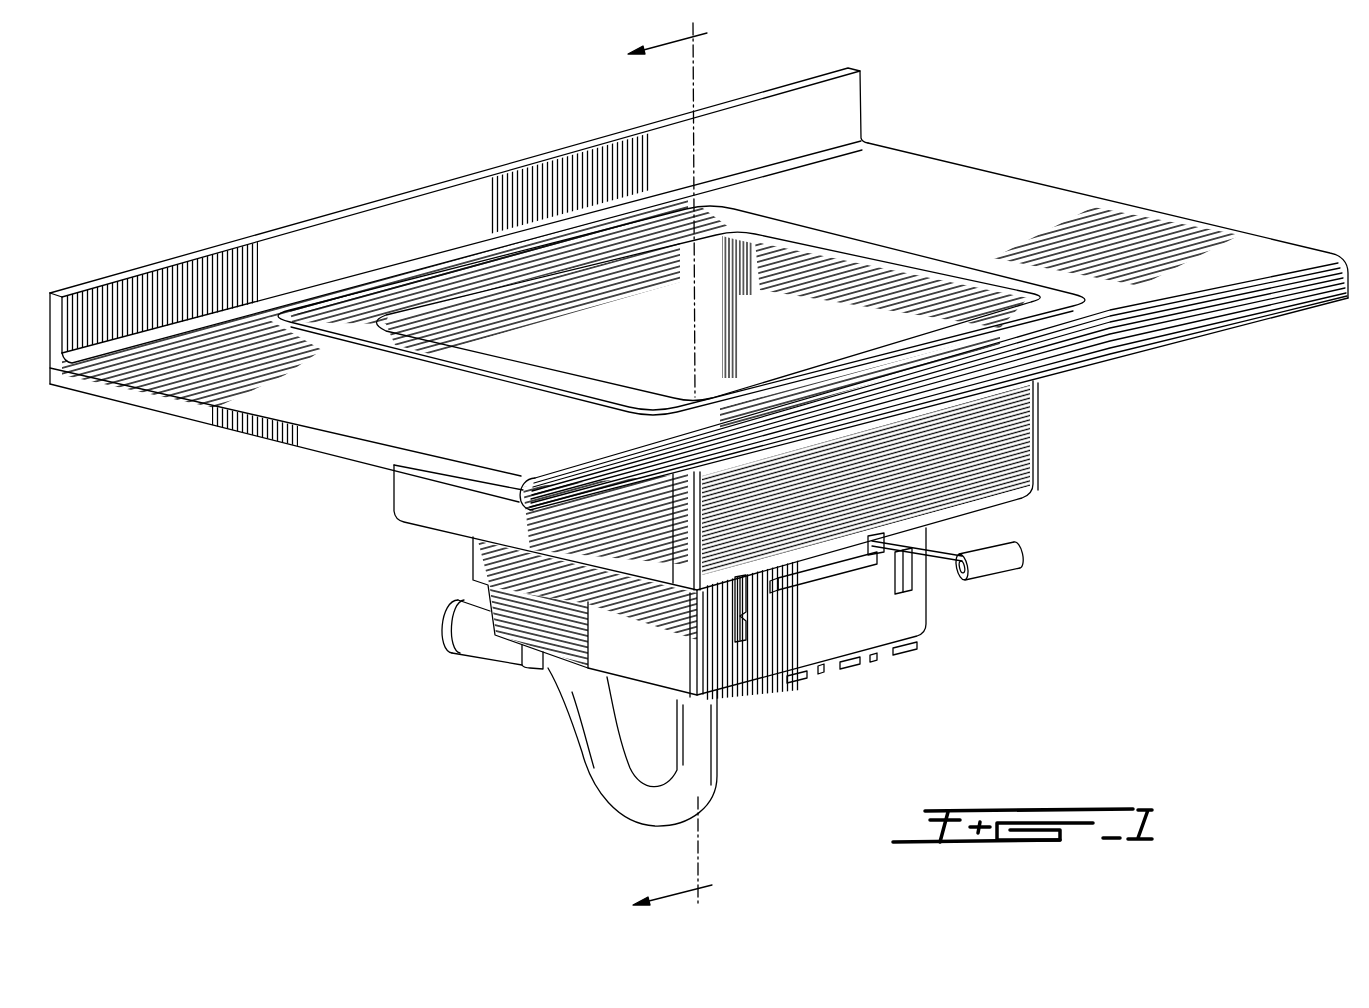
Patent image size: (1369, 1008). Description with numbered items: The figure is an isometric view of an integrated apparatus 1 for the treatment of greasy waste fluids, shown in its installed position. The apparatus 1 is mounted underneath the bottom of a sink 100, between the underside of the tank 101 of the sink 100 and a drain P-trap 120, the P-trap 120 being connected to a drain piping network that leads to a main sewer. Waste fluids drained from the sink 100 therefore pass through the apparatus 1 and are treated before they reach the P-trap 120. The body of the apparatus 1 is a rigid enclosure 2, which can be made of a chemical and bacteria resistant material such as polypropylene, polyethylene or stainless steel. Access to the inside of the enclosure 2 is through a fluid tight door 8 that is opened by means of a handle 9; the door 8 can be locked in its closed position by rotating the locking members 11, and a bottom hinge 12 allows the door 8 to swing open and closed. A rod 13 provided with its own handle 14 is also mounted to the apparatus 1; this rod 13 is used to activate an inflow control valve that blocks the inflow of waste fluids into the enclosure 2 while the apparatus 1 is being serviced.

The integrated apparatus 1 is at (1068, 616).
The rigid enclosure 2 is at (452, 557).
The fluid tight door 8 is at (905, 622).
The handle 9 is at (813, 590).
The locking members 11 is at (913, 580).
The bottom hinge 12 is at (880, 662).
The rod 13 is at (950, 543).
The handle 14 is at (1020, 563).
The sink 100 is at (848, 292).
The tank 101 is at (1013, 462).
The drain P-trap 120 is at (653, 815).